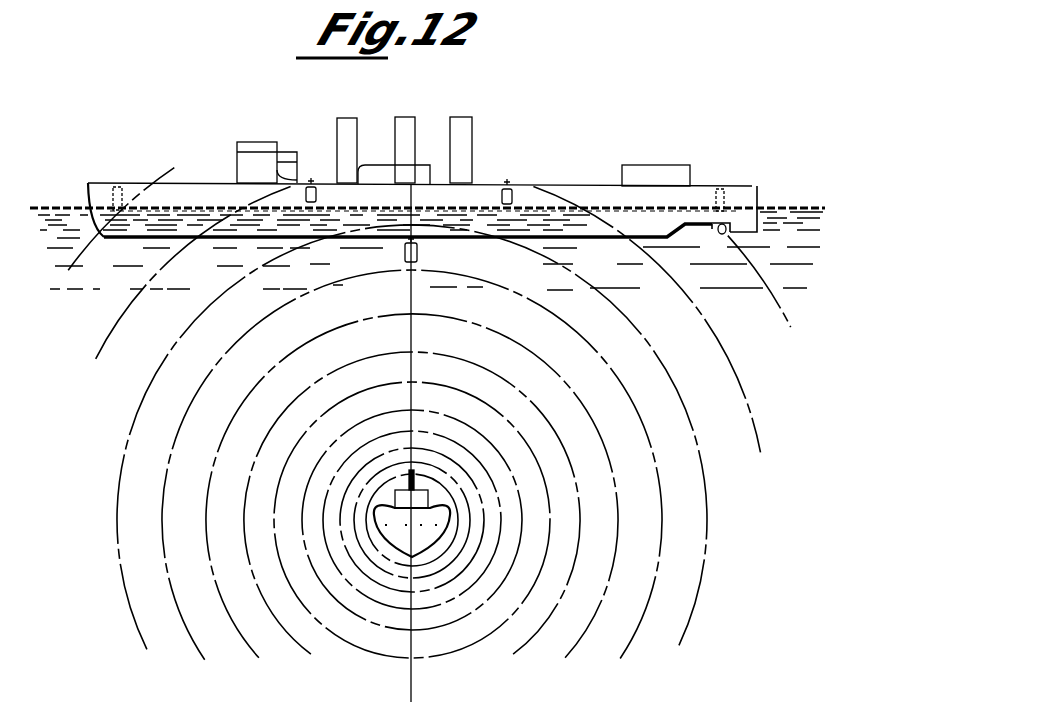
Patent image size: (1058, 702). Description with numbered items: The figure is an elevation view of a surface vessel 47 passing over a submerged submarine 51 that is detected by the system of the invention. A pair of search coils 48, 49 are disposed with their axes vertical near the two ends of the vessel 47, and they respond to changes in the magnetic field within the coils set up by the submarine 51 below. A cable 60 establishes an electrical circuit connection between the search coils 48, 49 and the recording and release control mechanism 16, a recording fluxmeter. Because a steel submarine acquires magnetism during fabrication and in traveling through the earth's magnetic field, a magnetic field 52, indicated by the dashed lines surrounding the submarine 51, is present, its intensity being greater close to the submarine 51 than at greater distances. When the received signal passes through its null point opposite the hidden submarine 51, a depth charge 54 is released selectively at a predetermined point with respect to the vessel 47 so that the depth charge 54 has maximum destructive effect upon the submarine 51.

The recording and release control mechanism 16 is at (414, 210).
The vessel 47 is at (486, 177).
The search coil 48 is at (118, 212).
The search coil 49 is at (721, 189).
The submarine 51 is at (395, 546).
The magnetic field 52 is at (760, 408).
The depth charge 54 is at (308, 189).
The cable 60 is at (181, 209).